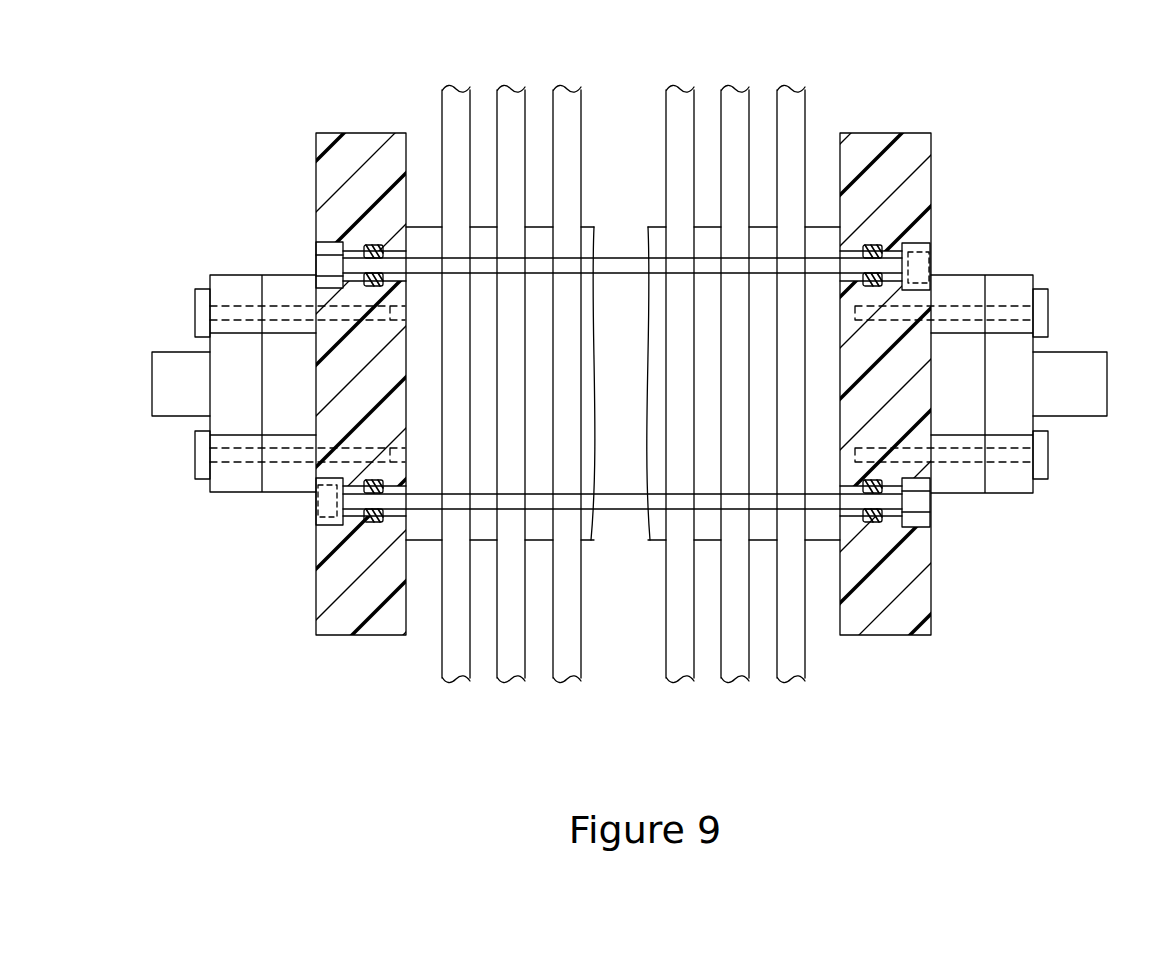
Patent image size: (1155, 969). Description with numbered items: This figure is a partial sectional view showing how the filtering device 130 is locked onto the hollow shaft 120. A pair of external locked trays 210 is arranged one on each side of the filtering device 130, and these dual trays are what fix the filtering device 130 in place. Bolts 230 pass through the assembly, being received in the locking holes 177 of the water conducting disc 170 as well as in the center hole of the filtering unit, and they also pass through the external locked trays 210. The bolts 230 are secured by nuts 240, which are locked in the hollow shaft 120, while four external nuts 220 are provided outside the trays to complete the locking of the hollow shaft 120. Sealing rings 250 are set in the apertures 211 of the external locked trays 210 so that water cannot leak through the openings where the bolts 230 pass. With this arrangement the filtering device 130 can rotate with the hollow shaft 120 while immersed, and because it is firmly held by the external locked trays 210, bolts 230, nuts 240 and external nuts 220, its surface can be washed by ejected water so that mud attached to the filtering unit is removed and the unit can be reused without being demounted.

The hollow shaft 120 is at (1097, 410).
The filtering device 130 is at (610, 415).
The water conducting disc 170 is at (422, 214).
The locking holes 177 is at (425, 510).
The external locked trays 210 is at (333, 177).
The apertures 211 is at (358, 248).
The external nuts 220 is at (228, 478).
The bolts 230 is at (612, 265).
The nuts 240 is at (318, 249).
The sealing rings 250 is at (370, 527).